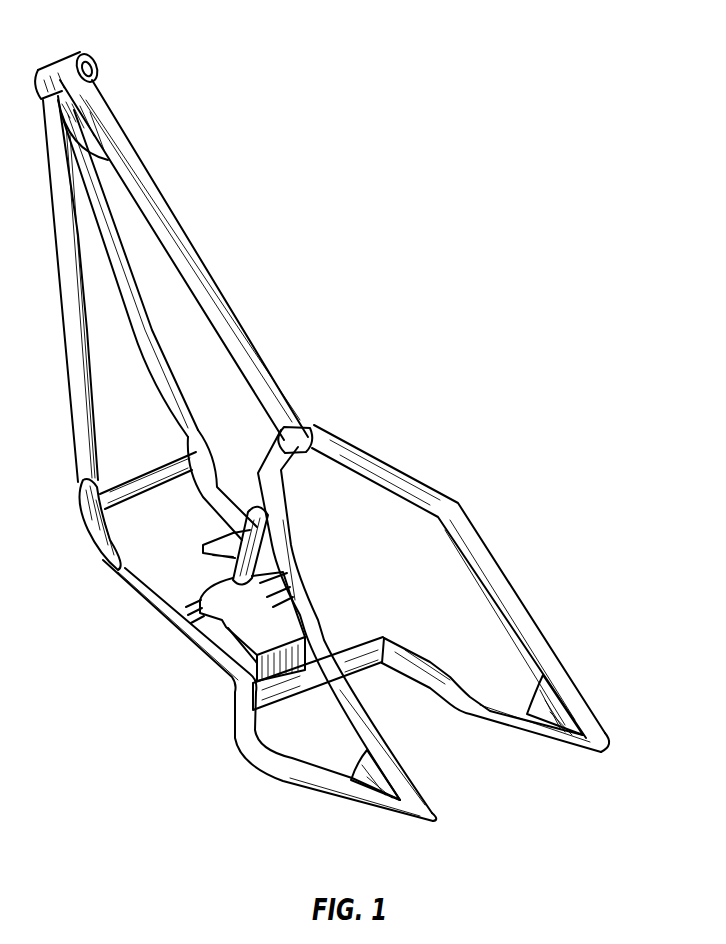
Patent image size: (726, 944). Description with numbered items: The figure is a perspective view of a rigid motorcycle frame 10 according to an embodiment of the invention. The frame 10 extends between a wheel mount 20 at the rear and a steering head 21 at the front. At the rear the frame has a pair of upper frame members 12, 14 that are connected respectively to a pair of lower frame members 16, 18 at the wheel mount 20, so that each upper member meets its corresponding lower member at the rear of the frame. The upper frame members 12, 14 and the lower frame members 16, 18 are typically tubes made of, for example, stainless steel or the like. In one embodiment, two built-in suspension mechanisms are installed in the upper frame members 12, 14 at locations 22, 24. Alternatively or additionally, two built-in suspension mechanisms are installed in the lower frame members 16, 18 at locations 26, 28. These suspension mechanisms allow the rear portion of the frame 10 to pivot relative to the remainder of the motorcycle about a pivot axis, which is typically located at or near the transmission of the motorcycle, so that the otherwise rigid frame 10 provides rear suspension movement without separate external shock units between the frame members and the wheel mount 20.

The motorcycle frame 10 is at (437, 225).
The upper frame member 12 is at (558, 652).
The upper frame member 14 is at (402, 741).
The lower frame member 16 is at (527, 727).
The lower frame member 18 is at (390, 810).
The wheel mount 20 is at (616, 722).
The steering head 21 is at (92, 47).
The location 22 is at (477, 517).
The location 24 is at (323, 566).
The location 26 is at (540, 703).
The location 28 is at (345, 800).